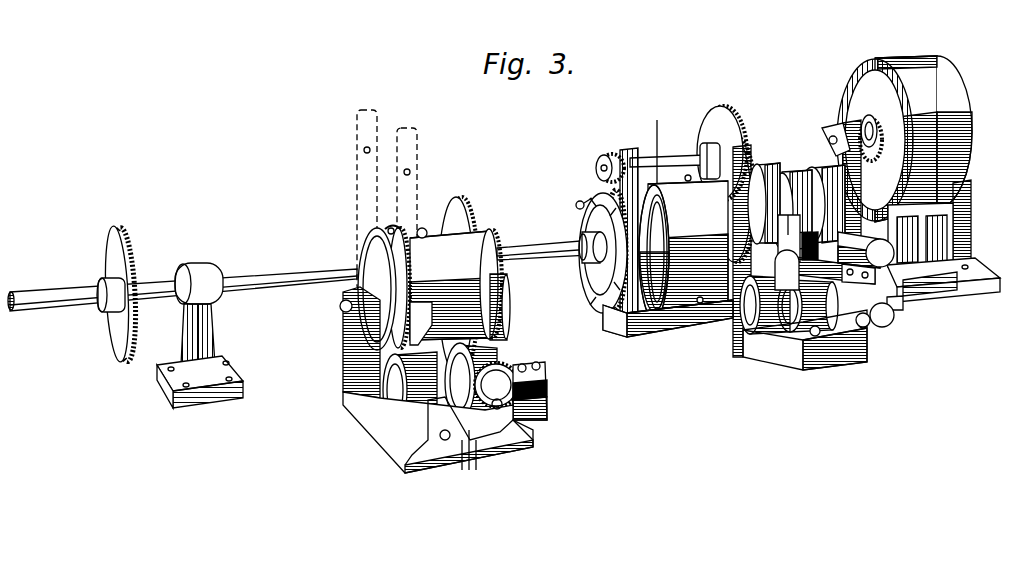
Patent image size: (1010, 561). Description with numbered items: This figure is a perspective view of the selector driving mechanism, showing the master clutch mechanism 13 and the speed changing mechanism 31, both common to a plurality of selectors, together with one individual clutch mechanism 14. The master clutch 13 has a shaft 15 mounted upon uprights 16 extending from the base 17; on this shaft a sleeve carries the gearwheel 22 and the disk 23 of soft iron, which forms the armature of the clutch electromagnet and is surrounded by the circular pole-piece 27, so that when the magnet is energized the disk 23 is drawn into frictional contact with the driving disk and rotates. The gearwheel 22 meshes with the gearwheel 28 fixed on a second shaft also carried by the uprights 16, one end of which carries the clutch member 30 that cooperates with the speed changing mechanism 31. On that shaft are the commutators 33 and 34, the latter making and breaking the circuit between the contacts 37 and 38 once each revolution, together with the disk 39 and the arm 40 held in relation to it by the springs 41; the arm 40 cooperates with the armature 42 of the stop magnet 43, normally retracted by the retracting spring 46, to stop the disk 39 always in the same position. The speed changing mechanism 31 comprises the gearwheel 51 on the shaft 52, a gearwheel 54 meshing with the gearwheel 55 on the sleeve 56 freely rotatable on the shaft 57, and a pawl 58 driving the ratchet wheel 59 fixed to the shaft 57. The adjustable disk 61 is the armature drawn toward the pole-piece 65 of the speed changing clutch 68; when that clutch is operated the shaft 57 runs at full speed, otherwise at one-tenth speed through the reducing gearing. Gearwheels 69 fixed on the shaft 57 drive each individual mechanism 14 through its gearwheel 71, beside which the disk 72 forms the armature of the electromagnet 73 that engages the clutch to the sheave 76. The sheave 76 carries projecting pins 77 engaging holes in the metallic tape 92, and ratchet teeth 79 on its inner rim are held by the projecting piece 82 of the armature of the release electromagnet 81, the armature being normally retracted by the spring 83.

The master clutch mechanism 13 is at (893, 40).
The individual clutch mechanism 14 is at (241, 335).
The shaft 15 is at (831, 133).
The uprights 16 is at (627, 152).
The base 17 is at (966, 302).
The gearwheel 22 is at (874, 126).
The disk 23 is at (875, 140).
The circular pole-piece 27 is at (950, 97).
The gearwheel 28 is at (892, 157).
The clutch member 30 is at (726, 170).
The speed changing mechanism 31 is at (639, 89).
The commutator 33 is at (787, 175).
The commutator 34 is at (812, 180).
The contact 37 is at (866, 250).
The contact 38 is at (884, 327).
The disk 39 is at (752, 170).
The arm 40 is at (762, 182).
The springs 41 is at (791, 238).
The armature 42 is at (825, 270).
The stop magnet 43 is at (768, 325).
The retracting spring 46 is at (748, 270).
The gearwheel 51 is at (715, 118).
The shaft 52 is at (680, 157).
The gearwheel 54 is at (598, 164).
The gearwheel 55 is at (606, 316).
The sleeve 56 is at (590, 260).
The shaft 57 is at (522, 246).
The pawl 58 is at (578, 202).
The ratchet wheel 59 is at (594, 297).
The disk 61 is at (654, 252).
The circular pole-piece 65 is at (656, 142).
The speed changing clutch 68 is at (688, 247).
The gearwheels 69 is at (131, 233).
The gearwheel 71 is at (506, 293).
The disk 72 is at (481, 247).
The electromagnet 73 is at (450, 285).
The sheave 76 is at (362, 252).
The projecting pins 77 is at (410, 224).
The teeth 79 is at (388, 226).
The electromagnet 81 is at (397, 400).
The projecting piece 82 is at (423, 316).
The spring 83 is at (469, 470).
The metallic tape 92 is at (418, 162).